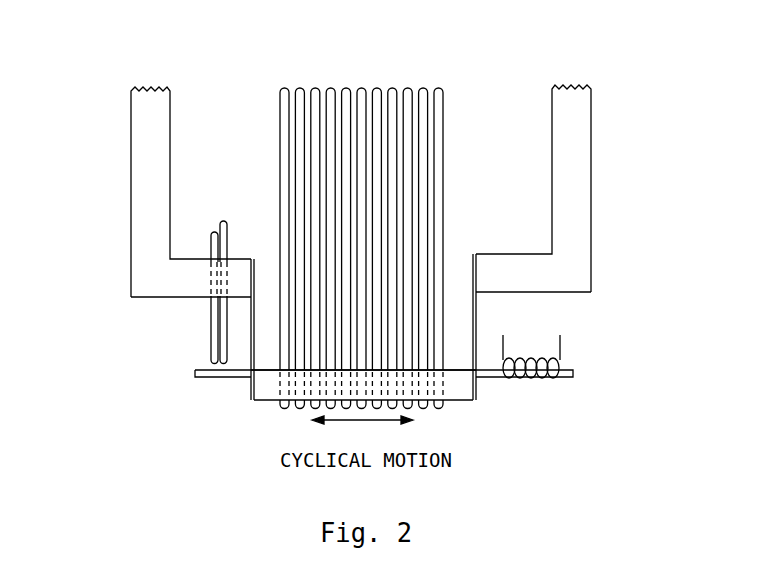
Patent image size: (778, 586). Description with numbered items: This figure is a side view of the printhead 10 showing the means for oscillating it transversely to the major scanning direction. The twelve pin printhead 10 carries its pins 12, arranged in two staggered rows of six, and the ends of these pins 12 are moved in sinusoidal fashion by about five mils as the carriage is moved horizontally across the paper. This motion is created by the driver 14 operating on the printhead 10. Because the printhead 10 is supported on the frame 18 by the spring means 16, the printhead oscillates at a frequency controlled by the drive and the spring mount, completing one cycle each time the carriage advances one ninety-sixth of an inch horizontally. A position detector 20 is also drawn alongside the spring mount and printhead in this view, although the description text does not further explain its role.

The printhead 10 is at (472, 400).
The pins 12 is at (445, 82).
The driver 14 is at (580, 356).
The spring means 16 is at (478, 318).
The frame 18 is at (592, 120).
The position detector 20 is at (209, 330).